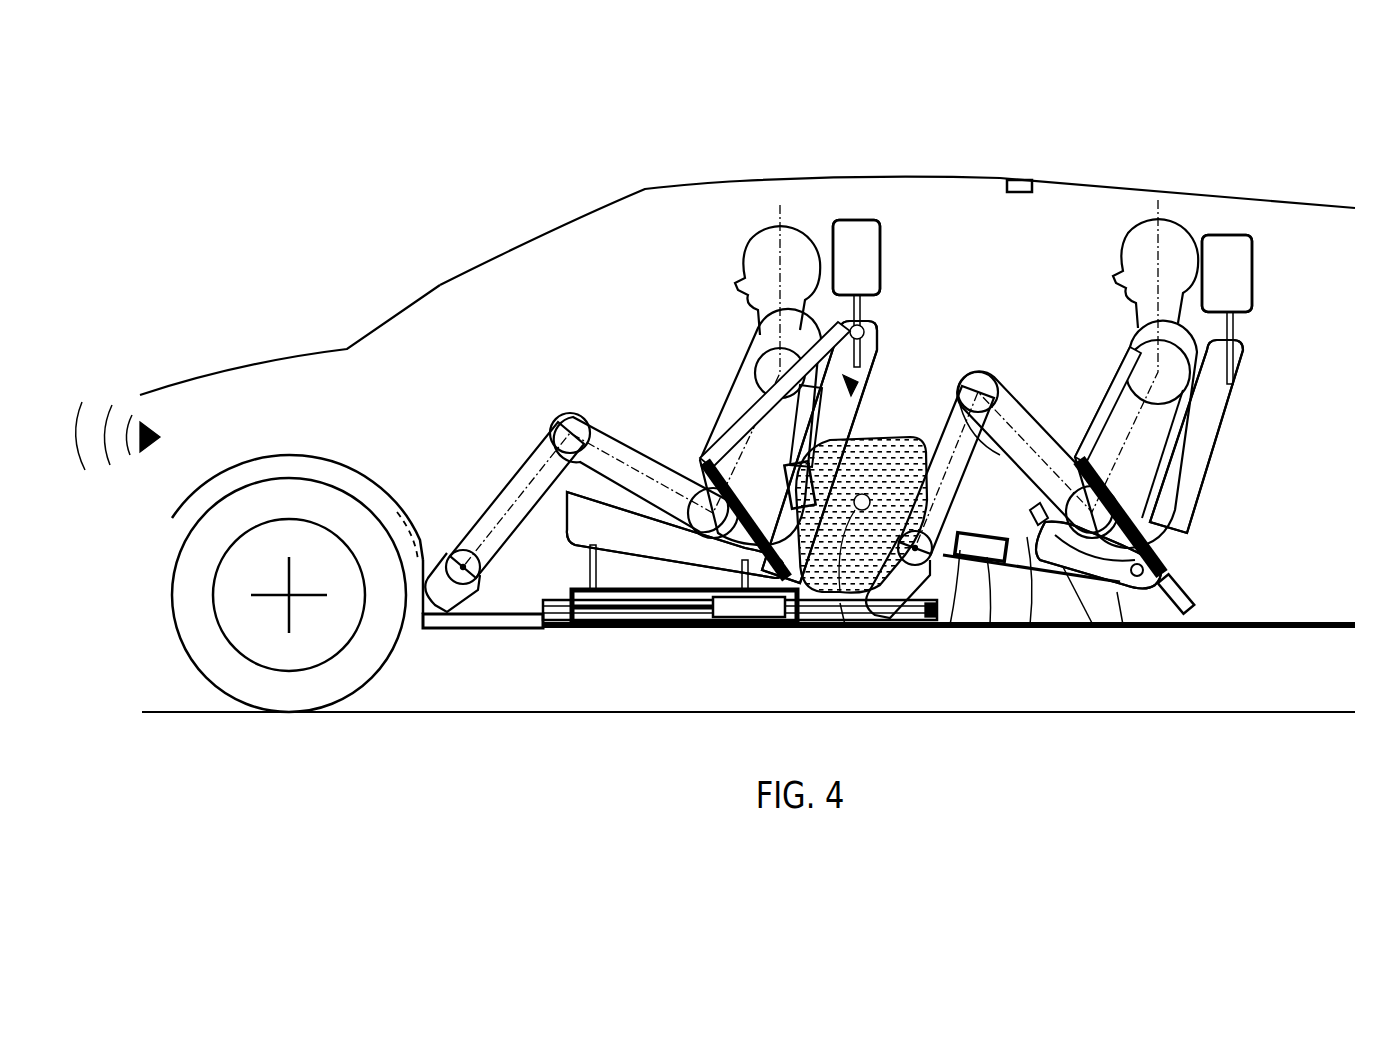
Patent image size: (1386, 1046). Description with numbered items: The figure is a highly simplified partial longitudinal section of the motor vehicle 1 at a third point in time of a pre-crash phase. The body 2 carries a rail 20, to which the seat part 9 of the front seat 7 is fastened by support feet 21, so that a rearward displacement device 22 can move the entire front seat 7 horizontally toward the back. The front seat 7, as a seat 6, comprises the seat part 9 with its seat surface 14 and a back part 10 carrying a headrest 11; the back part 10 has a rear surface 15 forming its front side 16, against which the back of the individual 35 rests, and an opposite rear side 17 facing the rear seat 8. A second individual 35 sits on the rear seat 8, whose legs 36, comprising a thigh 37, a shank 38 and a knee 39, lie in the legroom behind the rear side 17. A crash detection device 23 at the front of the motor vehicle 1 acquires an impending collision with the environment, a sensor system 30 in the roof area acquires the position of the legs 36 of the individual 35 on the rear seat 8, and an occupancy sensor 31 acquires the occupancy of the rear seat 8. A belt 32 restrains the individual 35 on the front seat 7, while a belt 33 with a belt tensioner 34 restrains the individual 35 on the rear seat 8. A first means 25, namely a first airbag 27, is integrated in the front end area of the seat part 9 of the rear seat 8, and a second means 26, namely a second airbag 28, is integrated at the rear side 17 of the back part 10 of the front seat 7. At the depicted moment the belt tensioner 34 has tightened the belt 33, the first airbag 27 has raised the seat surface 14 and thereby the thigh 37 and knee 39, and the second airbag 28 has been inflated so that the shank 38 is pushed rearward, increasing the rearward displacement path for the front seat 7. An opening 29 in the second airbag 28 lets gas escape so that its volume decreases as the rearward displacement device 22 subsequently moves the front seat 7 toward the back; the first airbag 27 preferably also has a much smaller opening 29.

The motor vehicle 1 is at (310, 201).
The body 2 is at (708, 183).
The seat 6 is at (909, 354).
The front seat 7 is at (812, 205).
The rear seat 8 is at (1190, 205).
The seat part 9 is at (580, 540).
The back part 10 is at (833, 367).
The headrest 11 is at (855, 232).
The seat surface 14 is at (637, 492).
The rear surface 15 is at (923, 428).
The front side 16 is at (740, 433).
The rear side 17 is at (910, 615).
The rail 20 is at (560, 620).
The support feet 21 is at (700, 582).
The rearward displacement device 22 is at (640, 585).
The crash detection device 23 is at (152, 422).
The first means 25 is at (987, 565).
The second means 26 is at (866, 479).
The first airbag 27 is at (1032, 526).
The second airbag 28 is at (913, 447).
The opening 29 is at (840, 603).
The sensor system 30 is at (1018, 180).
The occupancy sensor 31 is at (1093, 625).
The belt 32 is at (712, 445).
The belt 33 is at (1150, 545).
The belt tensioner 34 is at (1173, 588).
The individual 35 is at (708, 285).
The legs 36 is at (1028, 436).
The thigh 37 is at (1037, 430).
The shank 38 is at (955, 440).
The knee 39 is at (965, 400).